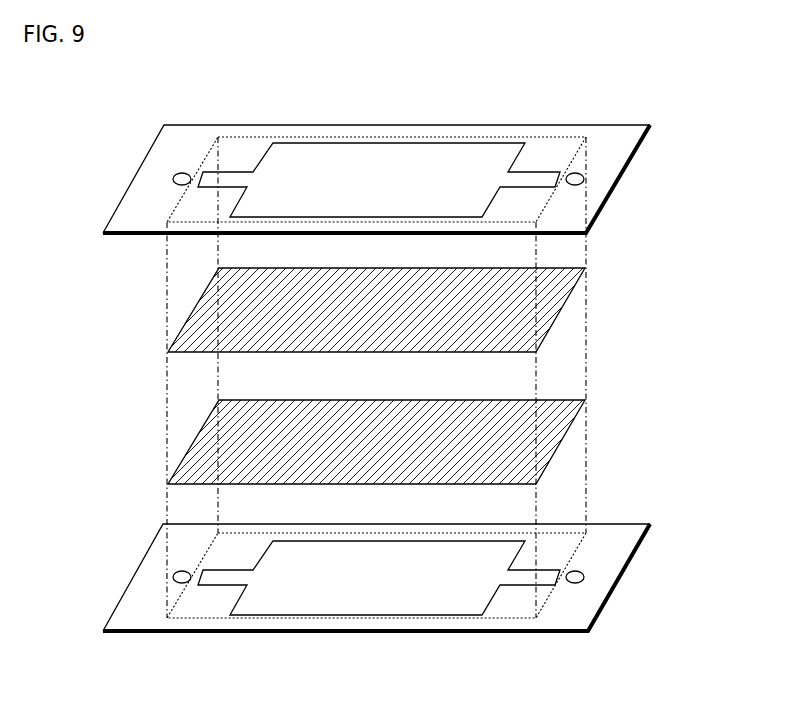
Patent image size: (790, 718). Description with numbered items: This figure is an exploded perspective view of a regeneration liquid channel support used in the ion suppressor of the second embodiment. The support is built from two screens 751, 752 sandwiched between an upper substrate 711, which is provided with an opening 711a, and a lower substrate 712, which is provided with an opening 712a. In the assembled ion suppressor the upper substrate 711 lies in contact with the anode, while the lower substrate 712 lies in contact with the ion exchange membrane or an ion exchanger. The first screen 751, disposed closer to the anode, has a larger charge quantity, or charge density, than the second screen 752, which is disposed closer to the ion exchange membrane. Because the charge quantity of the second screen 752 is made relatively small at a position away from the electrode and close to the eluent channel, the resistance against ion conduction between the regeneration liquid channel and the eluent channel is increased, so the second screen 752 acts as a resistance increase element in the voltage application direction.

The upper substrate 711 is at (610, 172).
The opening 711a is at (412, 152).
The first screen 751 is at (552, 307).
The second screen 752 is at (550, 442).
The lower substrate 712 is at (610, 570).
The opening 712a is at (382, 600).